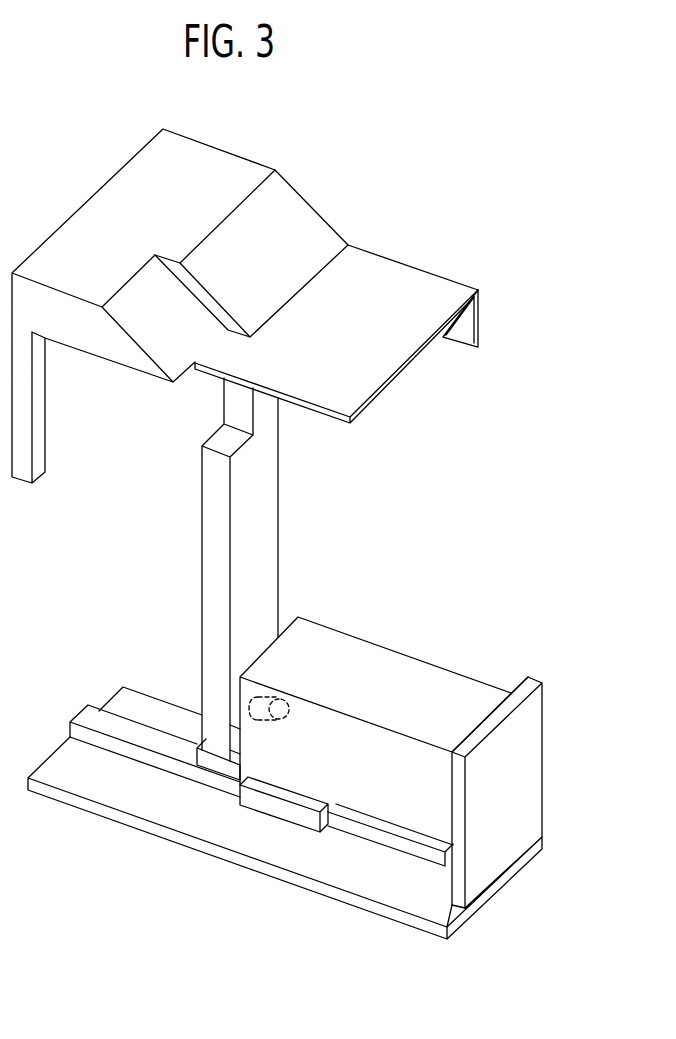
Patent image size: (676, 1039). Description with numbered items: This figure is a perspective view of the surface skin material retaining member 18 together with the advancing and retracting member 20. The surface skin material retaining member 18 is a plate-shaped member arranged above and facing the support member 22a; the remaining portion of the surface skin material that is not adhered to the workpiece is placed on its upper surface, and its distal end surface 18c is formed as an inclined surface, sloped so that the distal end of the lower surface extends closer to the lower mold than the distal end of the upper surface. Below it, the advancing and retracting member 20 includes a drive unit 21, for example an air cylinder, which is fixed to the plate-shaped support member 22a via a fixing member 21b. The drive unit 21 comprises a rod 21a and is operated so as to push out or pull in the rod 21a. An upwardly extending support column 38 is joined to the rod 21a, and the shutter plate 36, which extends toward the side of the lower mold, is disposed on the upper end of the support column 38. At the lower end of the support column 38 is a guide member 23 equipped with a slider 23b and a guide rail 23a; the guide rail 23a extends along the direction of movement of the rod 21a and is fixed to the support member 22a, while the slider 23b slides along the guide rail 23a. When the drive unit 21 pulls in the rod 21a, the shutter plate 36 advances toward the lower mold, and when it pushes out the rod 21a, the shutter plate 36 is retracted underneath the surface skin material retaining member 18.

The surface skin material retaining member 18 is at (220, 158).
The distal end surface 18c is at (300, 212).
The advancing and retracting member 20 is at (464, 234).
The shutter plate 36 is at (388, 352).
The support column 38 is at (265, 505).
The drive unit 21 is at (345, 645).
The rod 21a is at (289, 718).
The fixing member 21b is at (528, 767).
The support member 22a is at (160, 802).
The guide member 23 is at (261, 848).
The guide rail 23a is at (372, 836).
The slider 23b is at (282, 806).